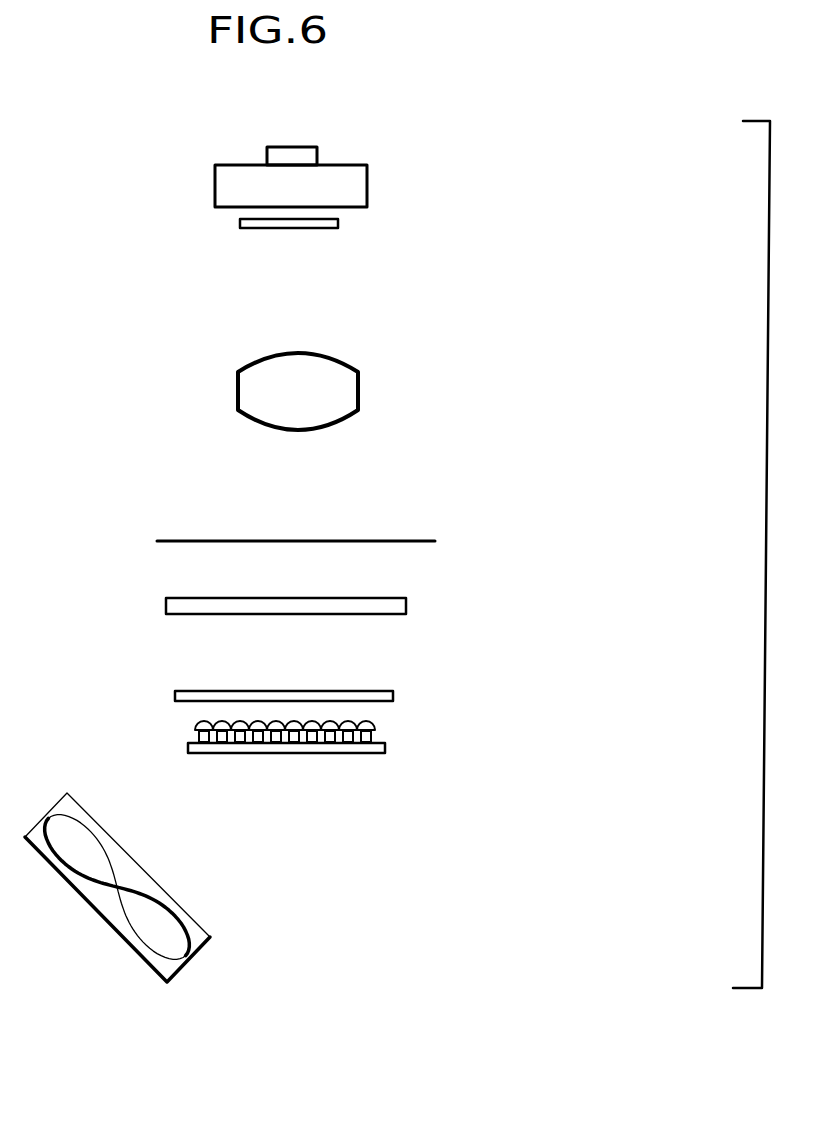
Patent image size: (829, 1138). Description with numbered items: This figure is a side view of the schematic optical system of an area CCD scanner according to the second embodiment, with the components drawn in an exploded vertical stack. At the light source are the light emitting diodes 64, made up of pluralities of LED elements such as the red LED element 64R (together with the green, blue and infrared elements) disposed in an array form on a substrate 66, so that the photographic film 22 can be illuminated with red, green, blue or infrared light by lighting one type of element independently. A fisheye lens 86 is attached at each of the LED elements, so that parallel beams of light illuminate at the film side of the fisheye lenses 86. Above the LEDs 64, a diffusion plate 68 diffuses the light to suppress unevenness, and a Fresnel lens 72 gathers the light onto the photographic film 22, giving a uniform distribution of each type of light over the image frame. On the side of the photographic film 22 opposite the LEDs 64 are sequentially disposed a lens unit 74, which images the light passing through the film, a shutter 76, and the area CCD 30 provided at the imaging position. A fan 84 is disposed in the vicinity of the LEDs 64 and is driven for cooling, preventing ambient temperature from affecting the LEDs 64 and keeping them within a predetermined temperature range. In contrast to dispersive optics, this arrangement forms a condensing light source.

The area CCD 30 is at (357, 185).
The shutter 76 is at (340, 225).
The lens unit 74 is at (340, 388).
The photographic film 22 is at (368, 540).
The Fresnel lens 72 is at (406, 604).
The diffusion plate 68 is at (393, 694).
The fisheye lens 86 is at (200, 726).
The LED element 64R is at (409, 718).
The substrate 66 is at (243, 753).
The light emitting diodes (LEDs) 64 is at (409, 750).
The fan 84 is at (127, 935).